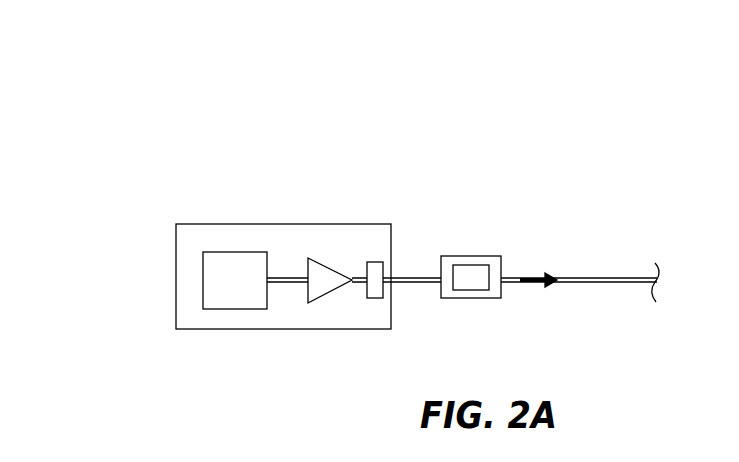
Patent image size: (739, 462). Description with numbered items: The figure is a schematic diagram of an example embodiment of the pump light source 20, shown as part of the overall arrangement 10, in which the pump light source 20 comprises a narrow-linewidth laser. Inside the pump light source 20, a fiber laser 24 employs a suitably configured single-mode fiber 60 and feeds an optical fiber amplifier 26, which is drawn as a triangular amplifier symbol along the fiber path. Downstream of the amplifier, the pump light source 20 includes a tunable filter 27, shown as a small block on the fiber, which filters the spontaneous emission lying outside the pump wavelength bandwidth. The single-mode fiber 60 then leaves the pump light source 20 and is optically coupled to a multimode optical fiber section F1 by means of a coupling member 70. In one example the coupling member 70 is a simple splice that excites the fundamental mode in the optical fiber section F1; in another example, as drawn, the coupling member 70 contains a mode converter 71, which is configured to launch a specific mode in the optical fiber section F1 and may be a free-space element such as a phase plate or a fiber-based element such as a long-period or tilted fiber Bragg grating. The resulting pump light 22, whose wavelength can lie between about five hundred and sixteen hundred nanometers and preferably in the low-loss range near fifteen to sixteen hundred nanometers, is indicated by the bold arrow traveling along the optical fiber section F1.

The optical sensing system 10 is at (128, 70).
The pump light source 20 is at (237, 226).
The fiber laser 24 is at (252, 296).
The optical fiber amplifier 26 is at (323, 264).
The tunable filter 27 is at (366, 293).
The single-mode fiber 60 is at (298, 270).
The coupling member 70 is at (470, 256).
The mode converter 71 is at (482, 265).
The pump light 22 is at (546, 287).
The multimode optical fiber section F1 is at (590, 277).